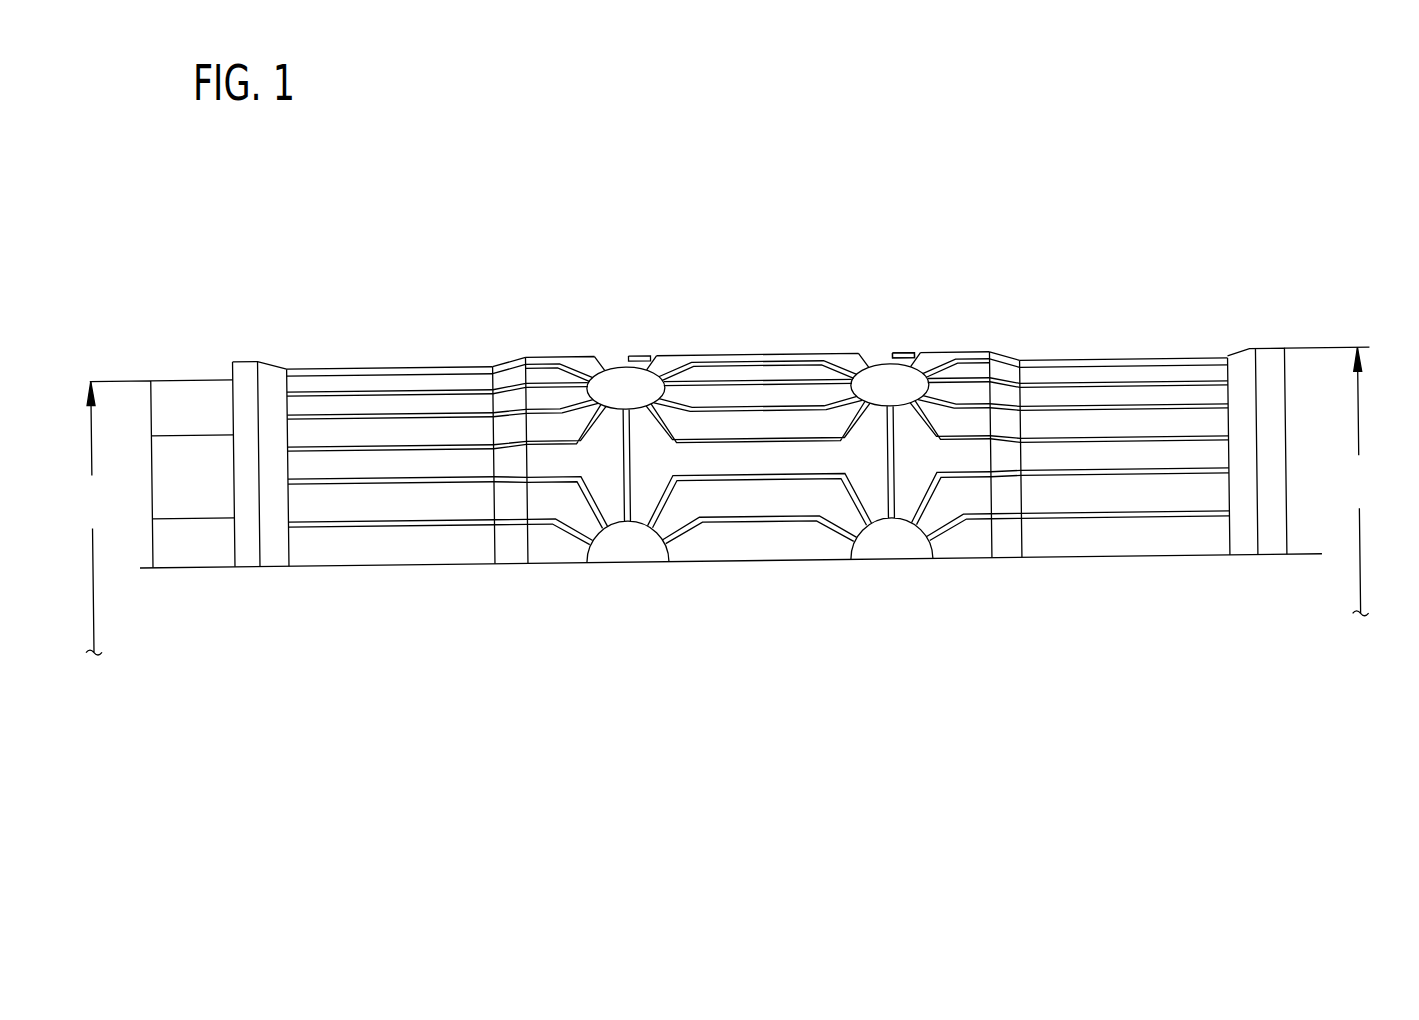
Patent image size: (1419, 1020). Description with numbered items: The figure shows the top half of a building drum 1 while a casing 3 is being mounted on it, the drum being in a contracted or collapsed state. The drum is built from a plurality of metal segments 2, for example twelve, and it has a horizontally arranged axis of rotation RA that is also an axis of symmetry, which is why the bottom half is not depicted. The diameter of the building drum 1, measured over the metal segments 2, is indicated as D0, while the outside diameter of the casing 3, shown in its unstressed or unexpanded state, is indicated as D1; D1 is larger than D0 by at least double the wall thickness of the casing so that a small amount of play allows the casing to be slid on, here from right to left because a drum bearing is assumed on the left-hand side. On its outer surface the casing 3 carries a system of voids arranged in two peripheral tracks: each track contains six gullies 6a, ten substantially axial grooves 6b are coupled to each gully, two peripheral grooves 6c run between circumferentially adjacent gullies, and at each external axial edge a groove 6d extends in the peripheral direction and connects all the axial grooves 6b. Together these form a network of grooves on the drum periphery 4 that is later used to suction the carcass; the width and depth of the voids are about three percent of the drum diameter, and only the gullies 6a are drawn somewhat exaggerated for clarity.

The building drum 1 is at (755, 379).
The metal segments 2 is at (177, 429).
The casing 3 is at (1268, 384).
The drum periphery 4 is at (562, 367).
The gullies 6a is at (635, 384).
The axial grooves 6b is at (405, 568).
The peripheral grooves 6c is at (893, 361).
The groove 6d is at (289, 373).
The axis of rotation RA is at (512, 568).
The diameter of building drum D0 is at (95, 518).
The outside diameter of casing D1 is at (1329, 482).